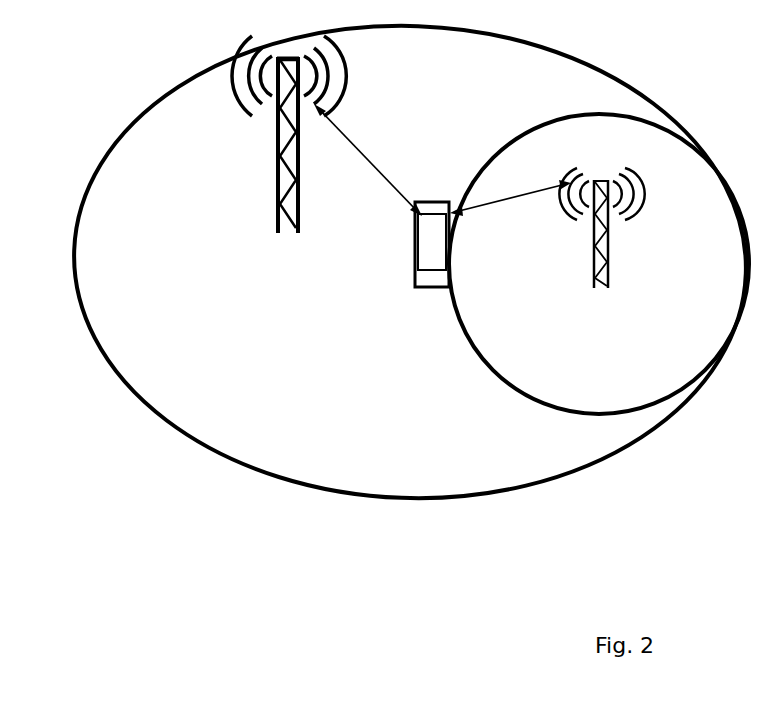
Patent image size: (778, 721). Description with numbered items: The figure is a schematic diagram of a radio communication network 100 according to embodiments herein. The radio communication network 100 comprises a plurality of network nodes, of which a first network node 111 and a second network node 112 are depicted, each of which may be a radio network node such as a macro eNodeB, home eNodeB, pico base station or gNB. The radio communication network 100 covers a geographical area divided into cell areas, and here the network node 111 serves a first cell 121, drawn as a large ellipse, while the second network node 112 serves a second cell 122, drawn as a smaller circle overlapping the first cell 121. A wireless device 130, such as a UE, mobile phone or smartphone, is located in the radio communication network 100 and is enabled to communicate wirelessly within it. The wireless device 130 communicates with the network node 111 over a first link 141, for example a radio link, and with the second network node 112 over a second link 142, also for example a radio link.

The radio communication network 100 is at (42, 527).
The first network node 111 is at (275, 218).
The second network node 112 is at (596, 288).
The first cell 121 is at (167, 97).
The second cell 122 is at (537, 398).
The wireless device 130 is at (431, 288).
The first link 141 is at (387, 183).
The second link 142 is at (487, 208).